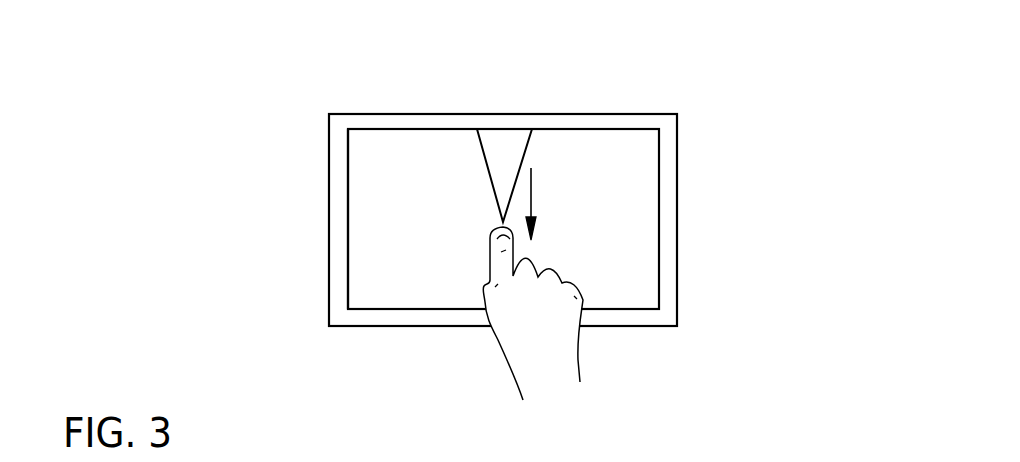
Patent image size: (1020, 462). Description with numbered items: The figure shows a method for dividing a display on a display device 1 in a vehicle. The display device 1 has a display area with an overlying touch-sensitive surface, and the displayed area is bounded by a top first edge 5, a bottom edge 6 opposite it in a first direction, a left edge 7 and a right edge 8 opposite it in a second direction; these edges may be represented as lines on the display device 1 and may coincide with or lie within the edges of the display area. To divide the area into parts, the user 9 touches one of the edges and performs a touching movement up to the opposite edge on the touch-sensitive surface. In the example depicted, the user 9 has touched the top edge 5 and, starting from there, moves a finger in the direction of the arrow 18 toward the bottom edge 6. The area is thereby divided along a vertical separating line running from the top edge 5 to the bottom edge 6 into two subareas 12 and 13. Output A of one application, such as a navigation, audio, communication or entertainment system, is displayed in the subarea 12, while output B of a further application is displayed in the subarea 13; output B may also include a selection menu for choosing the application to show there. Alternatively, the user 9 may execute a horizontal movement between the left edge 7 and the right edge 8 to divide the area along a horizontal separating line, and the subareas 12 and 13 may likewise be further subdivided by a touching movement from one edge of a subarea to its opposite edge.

The display device 1 is at (677, 143).
The top first edge 5 is at (557, 130).
The bottom edge 6 is at (622, 308).
The left edge 7 is at (350, 278).
The right edge 8 is at (658, 247).
The user 9 is at (509, 342).
The first subarea 12 is at (368, 194).
The second subarea 13 is at (632, 190).
The arrow 18 is at (531, 205).